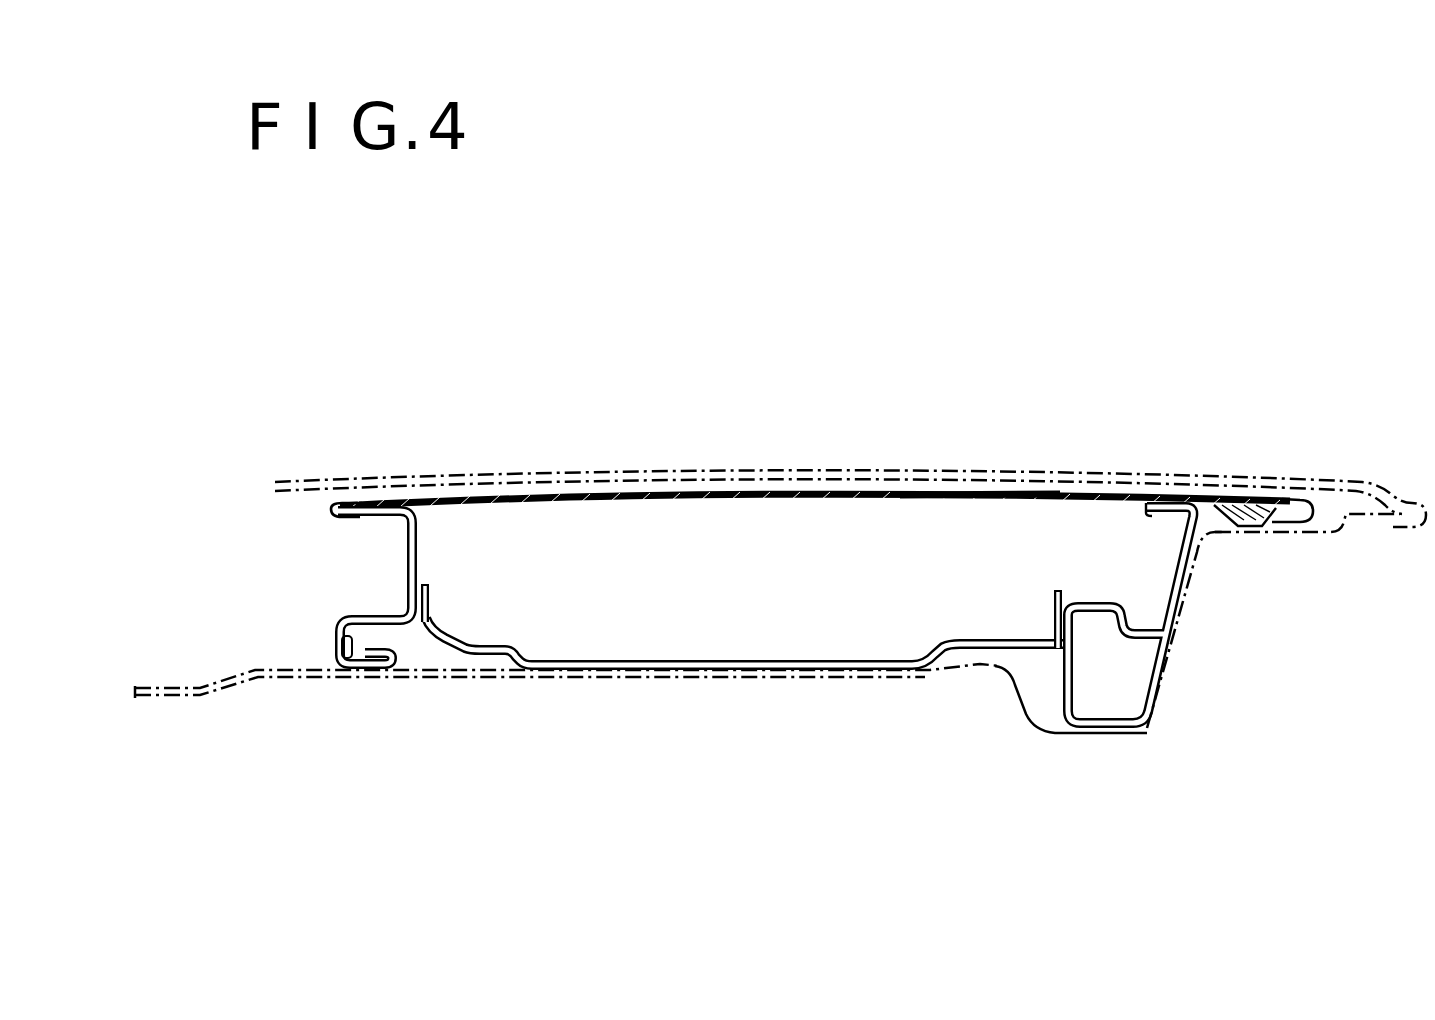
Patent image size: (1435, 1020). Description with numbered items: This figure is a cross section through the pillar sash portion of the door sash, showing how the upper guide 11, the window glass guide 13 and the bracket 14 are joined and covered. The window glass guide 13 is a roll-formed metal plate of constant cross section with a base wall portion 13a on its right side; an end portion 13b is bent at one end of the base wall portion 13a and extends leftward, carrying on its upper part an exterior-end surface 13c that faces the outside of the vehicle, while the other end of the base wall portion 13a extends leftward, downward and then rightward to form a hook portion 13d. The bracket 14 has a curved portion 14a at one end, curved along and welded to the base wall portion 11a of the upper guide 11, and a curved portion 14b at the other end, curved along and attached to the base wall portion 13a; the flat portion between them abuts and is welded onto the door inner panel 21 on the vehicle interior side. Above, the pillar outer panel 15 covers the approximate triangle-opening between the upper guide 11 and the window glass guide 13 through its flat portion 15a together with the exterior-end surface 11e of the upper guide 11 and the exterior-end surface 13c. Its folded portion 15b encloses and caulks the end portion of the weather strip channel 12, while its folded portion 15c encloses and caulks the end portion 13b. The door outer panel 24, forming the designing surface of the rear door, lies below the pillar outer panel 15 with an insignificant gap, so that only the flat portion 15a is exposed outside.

The upper guide 11 is at (1090, 606).
The base wall portion 11a is at (1062, 684).
The exterior-end surface 11e is at (1162, 500).
The weather strip channel 12 is at (1270, 528).
The window glass guide 13 is at (414, 570).
The base wall portion 13a is at (418, 538).
The end portion 13b is at (358, 516).
The exterior-end surface 13c is at (372, 506).
The hook portion 13d is at (346, 666).
The bracket 14 is at (976, 648).
The curved portion 14a is at (1055, 535).
The curved portion 14b is at (430, 596).
The pillar outer panel 15 is at (976, 504).
The flat portion 15a is at (992, 492).
The folded portion 15b is at (1292, 500).
The folded portion 15c is at (332, 500).
The door inner panel 21 is at (430, 676).
The door outer panel 24 is at (838, 468).